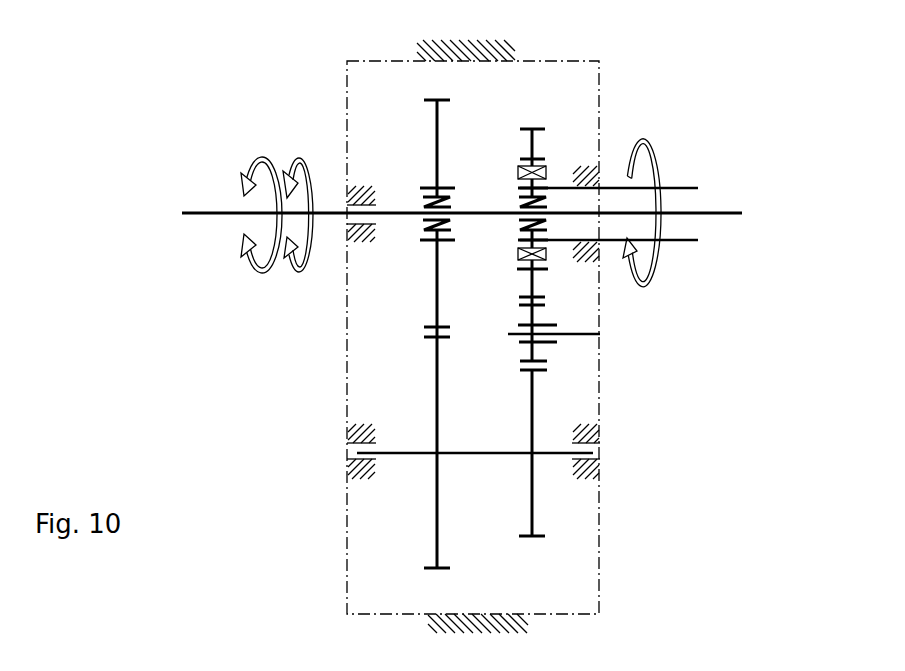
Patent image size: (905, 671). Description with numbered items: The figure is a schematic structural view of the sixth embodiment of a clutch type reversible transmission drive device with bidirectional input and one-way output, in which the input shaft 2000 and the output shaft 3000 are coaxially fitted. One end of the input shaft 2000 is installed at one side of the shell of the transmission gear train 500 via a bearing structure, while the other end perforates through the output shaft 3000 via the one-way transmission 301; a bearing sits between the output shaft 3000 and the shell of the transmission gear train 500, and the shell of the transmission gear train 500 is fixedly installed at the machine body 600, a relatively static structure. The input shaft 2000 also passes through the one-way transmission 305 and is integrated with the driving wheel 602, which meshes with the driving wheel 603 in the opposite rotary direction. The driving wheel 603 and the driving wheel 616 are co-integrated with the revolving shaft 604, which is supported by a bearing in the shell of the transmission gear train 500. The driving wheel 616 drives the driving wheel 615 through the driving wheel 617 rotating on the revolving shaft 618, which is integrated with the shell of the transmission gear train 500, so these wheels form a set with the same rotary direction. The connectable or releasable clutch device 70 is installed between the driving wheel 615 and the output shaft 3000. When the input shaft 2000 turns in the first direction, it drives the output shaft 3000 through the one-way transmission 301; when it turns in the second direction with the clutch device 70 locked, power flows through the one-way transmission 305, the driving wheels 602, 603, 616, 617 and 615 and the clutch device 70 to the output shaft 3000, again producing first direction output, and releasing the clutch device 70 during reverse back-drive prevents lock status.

The input shaft 2000 is at (232, 210).
The output shaft 3000 is at (667, 186).
The shell of the transmission gear train 500 is at (347, 128).
The machine body 600 is at (499, 57).
The driving wheel 602 is at (437, 138).
The driving wheel 603 is at (436, 420).
The revolving shaft 604 is at (566, 455).
The driving wheel 615 is at (535, 128).
The driving wheel 616 is at (541, 542).
The driving wheel 617 is at (520, 362).
The revolving shaft 618 is at (566, 337).
The connectable or releasable clutch device 70 is at (518, 173).
The one-way transmission 305 is at (424, 231).
The one-way transmission 301 is at (519, 231).